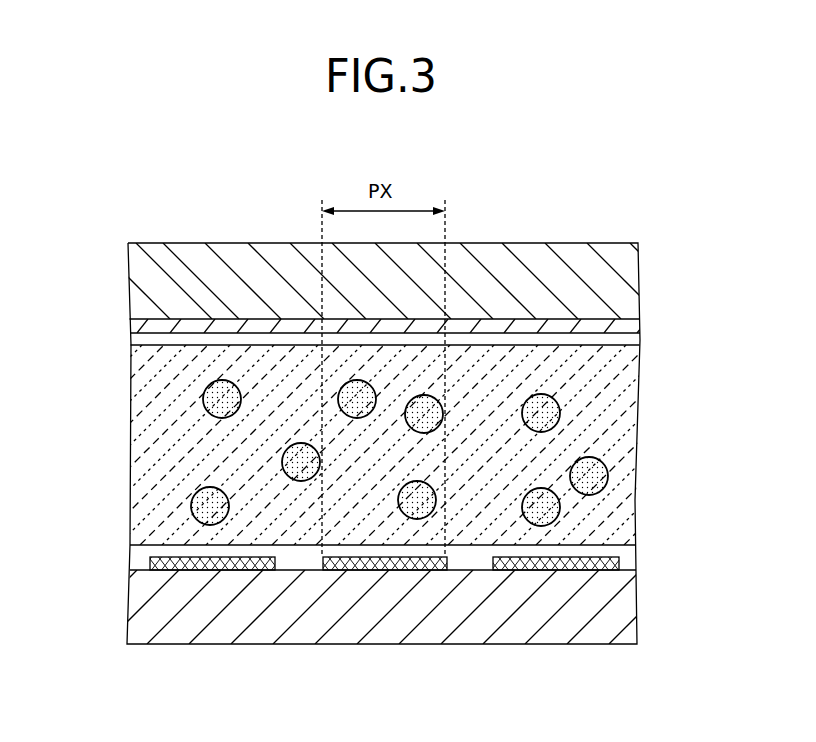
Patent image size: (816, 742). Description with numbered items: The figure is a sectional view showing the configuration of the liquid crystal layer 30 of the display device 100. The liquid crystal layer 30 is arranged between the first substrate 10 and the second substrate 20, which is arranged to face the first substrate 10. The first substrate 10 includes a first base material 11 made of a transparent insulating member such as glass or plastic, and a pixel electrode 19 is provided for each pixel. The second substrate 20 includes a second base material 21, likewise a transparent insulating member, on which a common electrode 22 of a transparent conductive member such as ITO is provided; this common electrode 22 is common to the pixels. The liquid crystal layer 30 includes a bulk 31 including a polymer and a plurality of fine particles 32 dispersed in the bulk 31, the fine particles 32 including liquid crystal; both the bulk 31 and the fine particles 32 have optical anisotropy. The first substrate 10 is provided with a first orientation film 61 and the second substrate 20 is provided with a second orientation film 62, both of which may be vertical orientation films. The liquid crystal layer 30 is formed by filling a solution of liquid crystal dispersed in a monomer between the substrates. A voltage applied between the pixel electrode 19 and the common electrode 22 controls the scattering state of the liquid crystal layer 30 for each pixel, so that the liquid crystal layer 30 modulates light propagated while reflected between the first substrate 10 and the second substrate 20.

The display device 100 is at (566, 212).
The first substrate 10 is at (380, 595).
The first base material 11 is at (627, 608).
The pixel electrode 19 is at (623, 562).
The second substrate 20 is at (365, 294).
The second base material 21 is at (628, 285).
The common electrode 22 is at (627, 327).
The liquid crystal layer 30 is at (408, 445).
The bulk 31 is at (630, 403).
The fine particles 32 is at (607, 470).
The first orientation film 61 is at (627, 553).
The second orientation film 62 is at (628, 338).